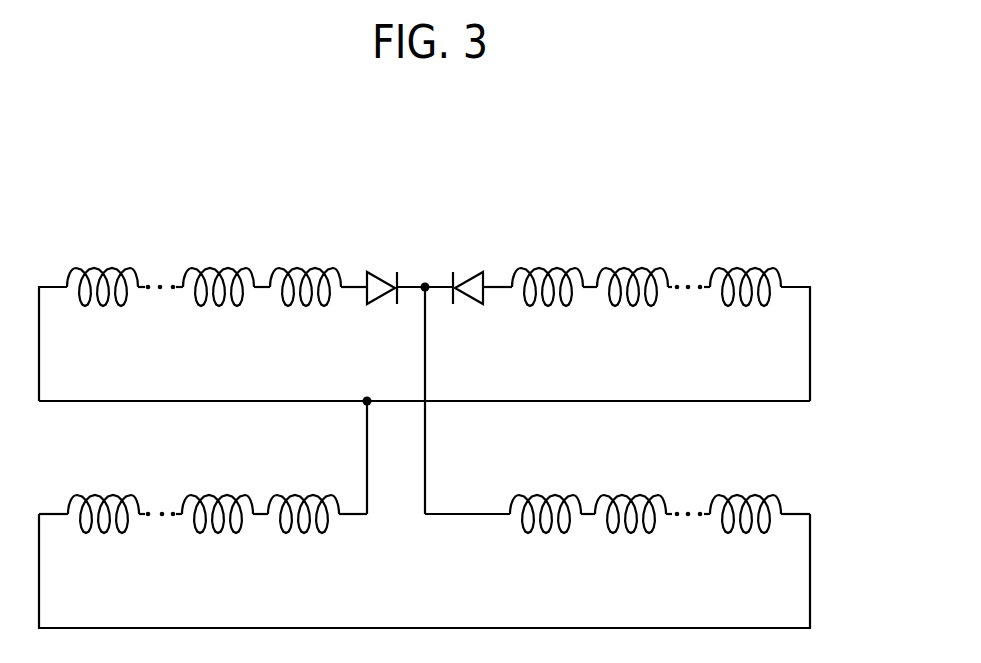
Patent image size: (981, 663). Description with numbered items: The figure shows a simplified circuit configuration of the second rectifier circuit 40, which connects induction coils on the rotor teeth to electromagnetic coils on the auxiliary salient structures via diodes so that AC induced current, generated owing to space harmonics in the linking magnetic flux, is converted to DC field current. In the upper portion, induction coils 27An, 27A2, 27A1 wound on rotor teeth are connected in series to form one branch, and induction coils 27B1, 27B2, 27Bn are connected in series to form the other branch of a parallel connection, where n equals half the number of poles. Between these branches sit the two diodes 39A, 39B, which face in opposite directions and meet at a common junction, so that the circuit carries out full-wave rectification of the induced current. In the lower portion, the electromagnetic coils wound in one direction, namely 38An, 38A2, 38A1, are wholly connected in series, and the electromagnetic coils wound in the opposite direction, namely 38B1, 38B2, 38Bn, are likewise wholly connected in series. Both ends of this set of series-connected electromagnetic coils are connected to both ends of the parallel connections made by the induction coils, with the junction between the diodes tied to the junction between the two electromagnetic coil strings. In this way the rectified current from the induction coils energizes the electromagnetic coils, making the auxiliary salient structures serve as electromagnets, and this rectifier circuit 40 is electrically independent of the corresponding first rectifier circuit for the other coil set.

The induction coil 27An is at (105, 268).
The induction coil 27A2 is at (222, 268).
The induction coil 27A1 is at (307, 268).
The induction coil 27B1 is at (548, 268).
The induction coil 27B2 is at (635, 268).
The induction coil 27Bn is at (748, 268).
The electromagnetic coil 38An is at (104, 495).
The electromagnetic coil 38A2 is at (220, 495).
The electromagnetic coil 38A1 is at (305, 495).
The electromagnetic coil 38B1 is at (548, 495).
The electromagnetic coil 38B2 is at (635, 495).
The electromagnetic coil 38Bn is at (748, 495).
The diode 39A is at (385, 272).
The diode 39B is at (463, 272).
The second rectifier circuit 40 is at (873, 429).